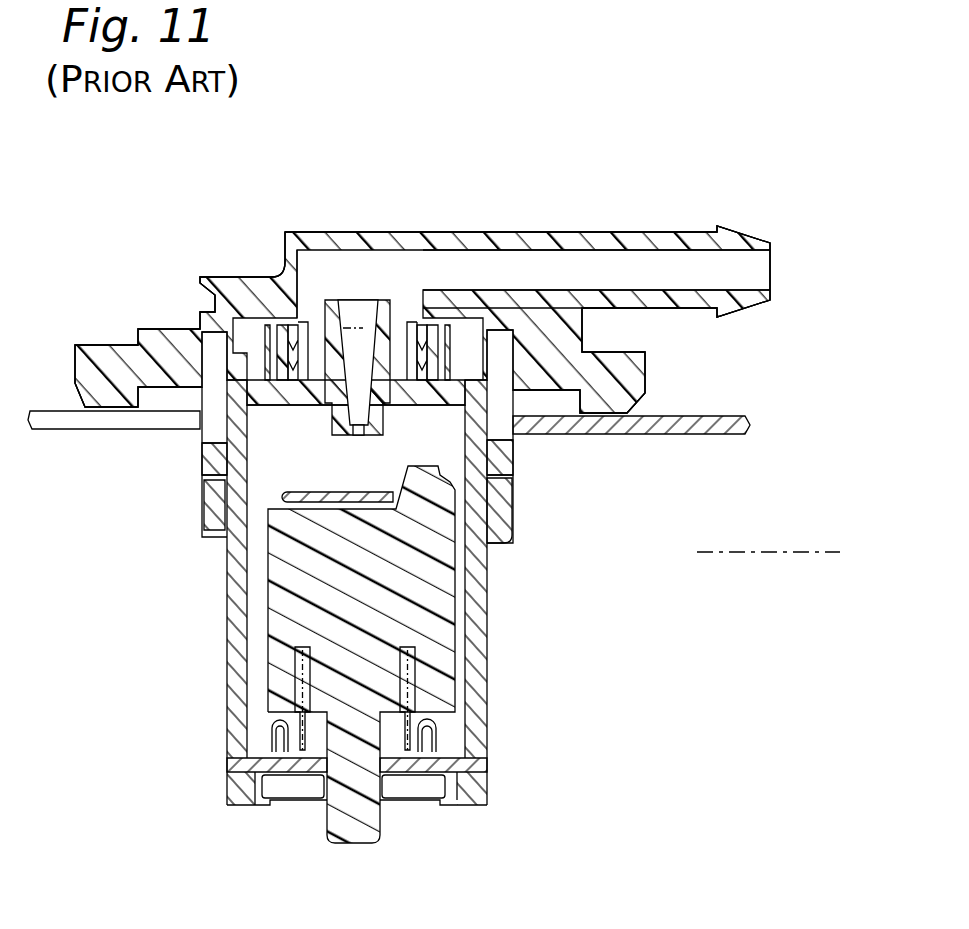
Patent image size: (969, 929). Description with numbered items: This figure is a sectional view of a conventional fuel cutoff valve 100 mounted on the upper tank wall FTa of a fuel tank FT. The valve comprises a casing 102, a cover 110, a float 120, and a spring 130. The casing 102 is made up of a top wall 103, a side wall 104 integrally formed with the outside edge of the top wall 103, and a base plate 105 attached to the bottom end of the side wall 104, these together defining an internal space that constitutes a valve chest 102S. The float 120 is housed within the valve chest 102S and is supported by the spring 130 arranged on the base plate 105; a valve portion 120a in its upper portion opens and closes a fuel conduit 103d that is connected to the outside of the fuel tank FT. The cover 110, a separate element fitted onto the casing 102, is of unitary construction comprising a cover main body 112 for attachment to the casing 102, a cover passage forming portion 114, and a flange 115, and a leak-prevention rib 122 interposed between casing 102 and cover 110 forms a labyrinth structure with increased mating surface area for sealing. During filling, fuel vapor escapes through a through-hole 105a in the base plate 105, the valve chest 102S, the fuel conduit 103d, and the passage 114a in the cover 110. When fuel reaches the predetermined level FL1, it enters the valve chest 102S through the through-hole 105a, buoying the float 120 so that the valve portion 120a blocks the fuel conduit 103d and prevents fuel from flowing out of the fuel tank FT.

The fuel cutoff valve 100 is at (725, 130).
The casing 102 is at (492, 612).
The valve chest 102S is at (448, 453).
The top wall 103 is at (438, 397).
The fuel conduit 103d is at (362, 333).
The side wall 104 is at (470, 668).
The base plate 105 is at (457, 805).
The through-hole 105a is at (327, 778).
The cover 110 is at (335, 242).
The cover main body 112 is at (268, 287).
The cover passage forming portion 114 is at (640, 232).
The passage 114a is at (540, 265).
The flange 115 is at (620, 373).
The float 120 is at (268, 620).
The valve portion 120a is at (382, 492).
The leak-prevention rib 122 is at (440, 330).
The spring 130 is at (430, 742).
The upper tank wall FTa is at (733, 418).
The fuel tank FT is at (114, 420).
The predetermined level FL1 is at (790, 548).